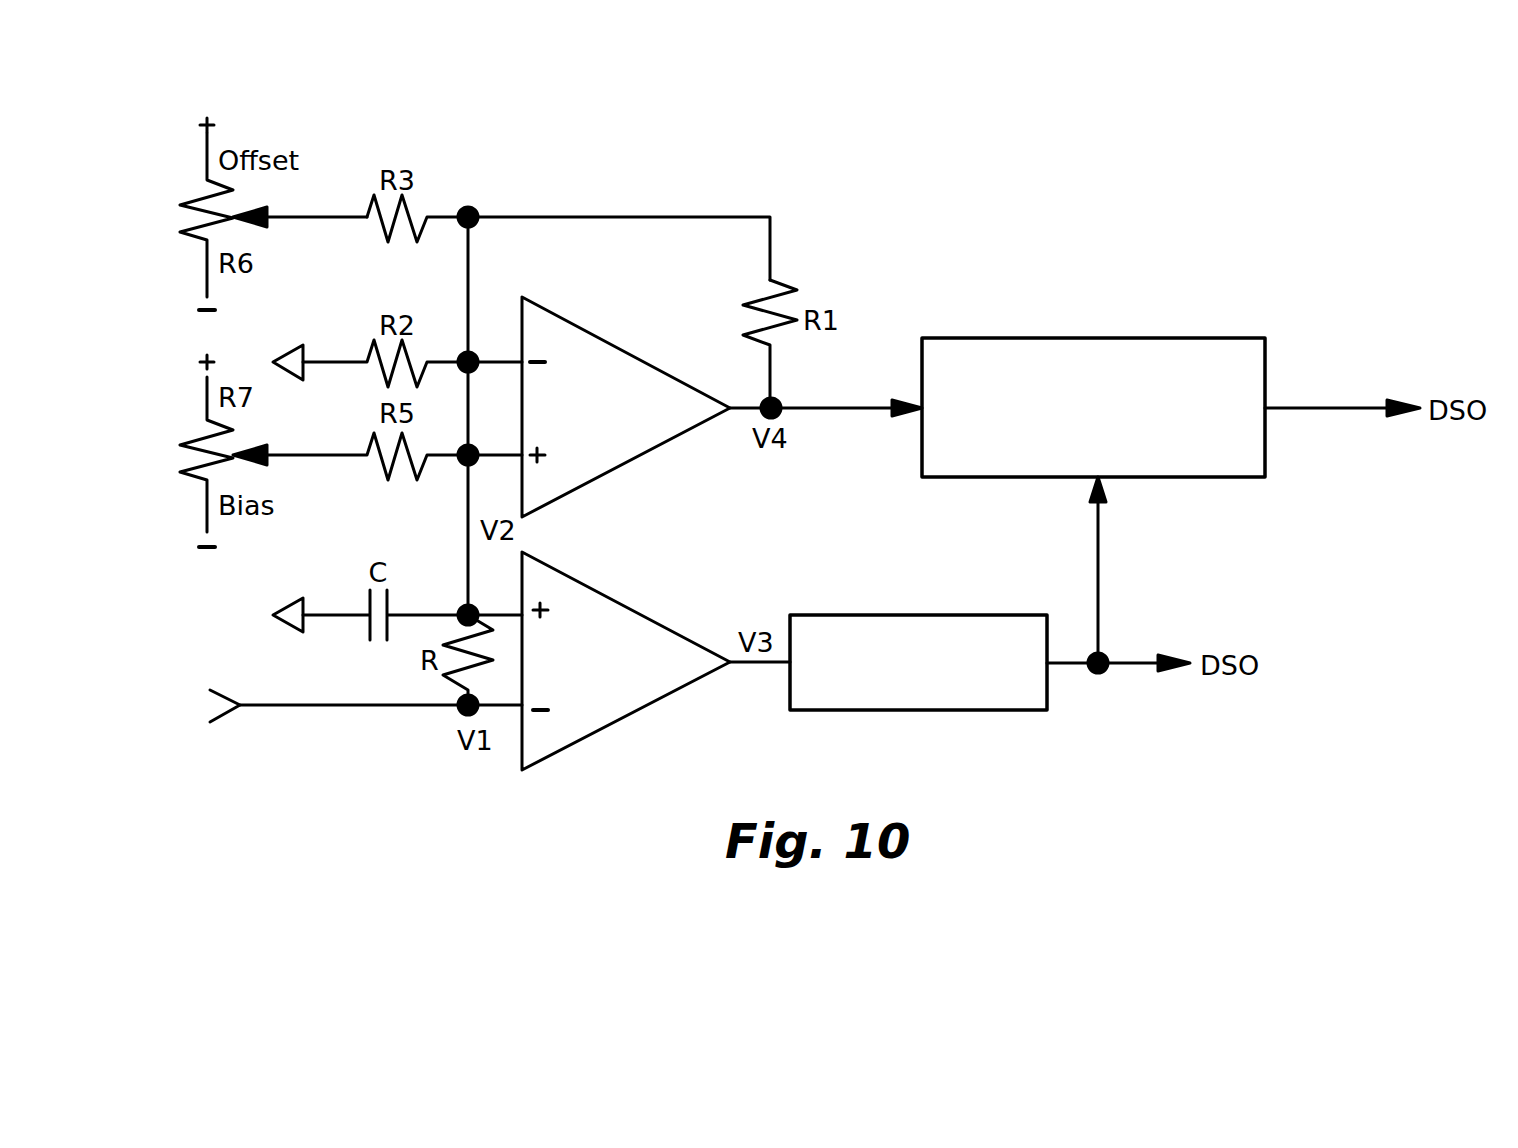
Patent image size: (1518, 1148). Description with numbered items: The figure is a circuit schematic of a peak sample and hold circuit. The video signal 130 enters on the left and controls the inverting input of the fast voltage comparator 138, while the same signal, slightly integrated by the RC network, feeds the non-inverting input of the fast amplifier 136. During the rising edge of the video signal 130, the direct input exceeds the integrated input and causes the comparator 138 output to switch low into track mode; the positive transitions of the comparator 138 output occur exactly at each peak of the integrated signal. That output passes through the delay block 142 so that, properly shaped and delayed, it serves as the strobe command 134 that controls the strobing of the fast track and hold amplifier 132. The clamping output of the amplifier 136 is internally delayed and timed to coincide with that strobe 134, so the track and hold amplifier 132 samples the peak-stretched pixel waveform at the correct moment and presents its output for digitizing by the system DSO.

The video signal 130 is at (228, 690).
The track and hold amplifier 132 is at (1090, 348).
The strobe command 134 is at (1102, 562).
The fast amplifier 136 is at (633, 447).
The fast voltage comparator 138 is at (603, 723).
The Delay 1 142 is at (918, 625).